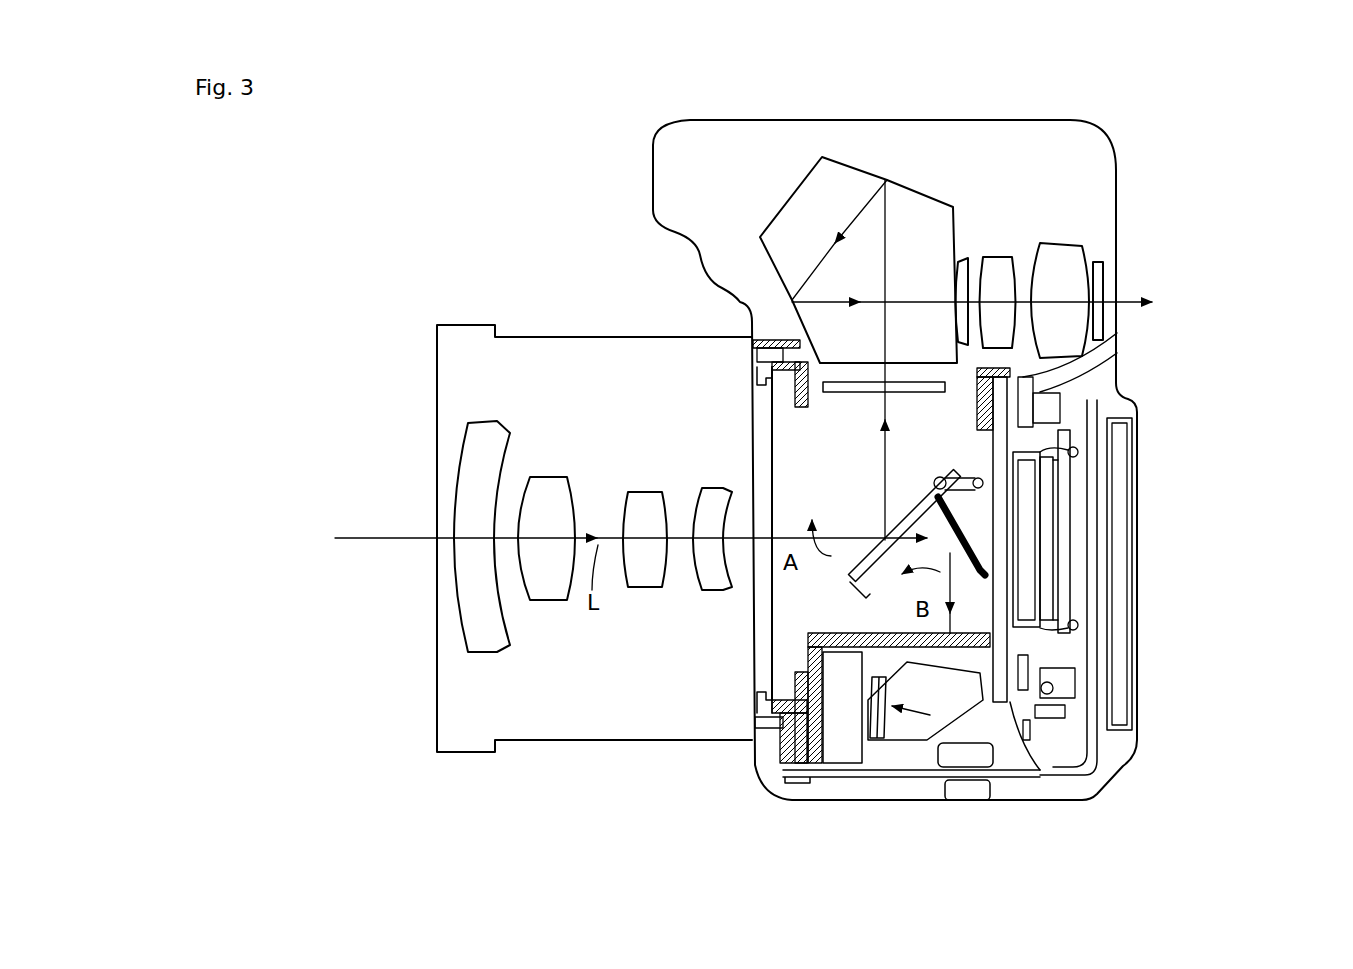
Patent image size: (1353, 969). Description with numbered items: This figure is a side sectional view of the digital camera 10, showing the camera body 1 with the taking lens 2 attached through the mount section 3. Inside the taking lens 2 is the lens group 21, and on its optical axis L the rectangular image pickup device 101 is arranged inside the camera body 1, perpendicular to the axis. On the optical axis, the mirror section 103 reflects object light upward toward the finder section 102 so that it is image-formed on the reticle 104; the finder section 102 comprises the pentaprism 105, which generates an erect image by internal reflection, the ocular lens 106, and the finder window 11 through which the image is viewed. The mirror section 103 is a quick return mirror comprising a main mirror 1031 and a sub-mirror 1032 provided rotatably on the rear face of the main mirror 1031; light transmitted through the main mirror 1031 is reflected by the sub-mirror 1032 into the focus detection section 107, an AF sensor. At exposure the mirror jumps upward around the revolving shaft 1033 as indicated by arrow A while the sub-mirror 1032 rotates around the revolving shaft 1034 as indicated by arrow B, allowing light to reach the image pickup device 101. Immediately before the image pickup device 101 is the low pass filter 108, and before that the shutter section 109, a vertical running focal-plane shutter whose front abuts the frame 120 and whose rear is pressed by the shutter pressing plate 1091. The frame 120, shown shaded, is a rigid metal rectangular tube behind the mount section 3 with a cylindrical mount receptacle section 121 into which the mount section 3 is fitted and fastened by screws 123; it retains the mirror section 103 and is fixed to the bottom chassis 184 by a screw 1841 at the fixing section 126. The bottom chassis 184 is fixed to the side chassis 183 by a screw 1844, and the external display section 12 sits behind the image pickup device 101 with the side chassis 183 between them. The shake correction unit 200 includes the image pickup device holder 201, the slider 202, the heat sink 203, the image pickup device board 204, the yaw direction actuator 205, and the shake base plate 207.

The camera body 1 is at (1152, 405).
The taking lens 2 is at (580, 725).
The mount section 3 is at (757, 372).
The digital camera 10 is at (1220, 150).
The finder window 11 is at (1103, 272).
The external display section 12 is at (1122, 535).
The lens group 21 is at (732, 413).
The image pickup device 101 is at (1050, 515).
The finder section 102 is at (948, 180).
The mirror section 103 is at (830, 582).
The reticle 104 is at (845, 394).
The pentaprism 105 is at (822, 212).
The ocular lens 106 is at (1017, 247).
The focus detection section 107 is at (905, 742).
The low pass filter 108 is at (1030, 490).
The shutter section 109 is at (1018, 800).
The frame 120 is at (848, 765).
The mount receptacle section 121 is at (783, 355).
The screws 123 is at (752, 340).
The fixing section 126 is at (828, 755).
The side chassis 183 is at (1097, 613).
The bottom chassis 184 is at (980, 779).
The shake correction unit 200 is at (1045, 646).
The image pickup device holder 201 is at (1078, 452).
The slider 202 is at (1062, 398).
The heat sink 203 is at (1064, 548).
The image pickup device board 204 is at (1070, 575).
The yaw direction actuator 205 is at (1075, 698).
The shake base plate 207 is at (1047, 395).
The main mirror 1031 is at (878, 575).
The sub-mirror 1032 is at (995, 780).
The revolving shaft 1033 is at (976, 478).
The revolving shaft 1034 is at (936, 480).
The shutter pressing plate 1091 is at (1045, 375).
The screw 1841 is at (790, 782).
The screw 1844 is at (1085, 800).